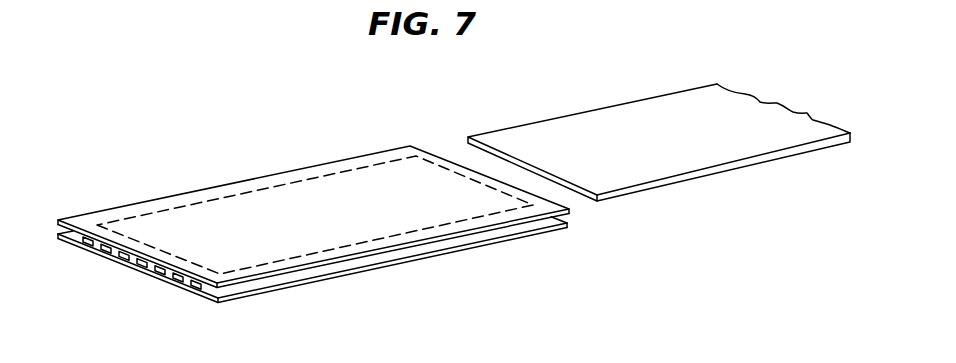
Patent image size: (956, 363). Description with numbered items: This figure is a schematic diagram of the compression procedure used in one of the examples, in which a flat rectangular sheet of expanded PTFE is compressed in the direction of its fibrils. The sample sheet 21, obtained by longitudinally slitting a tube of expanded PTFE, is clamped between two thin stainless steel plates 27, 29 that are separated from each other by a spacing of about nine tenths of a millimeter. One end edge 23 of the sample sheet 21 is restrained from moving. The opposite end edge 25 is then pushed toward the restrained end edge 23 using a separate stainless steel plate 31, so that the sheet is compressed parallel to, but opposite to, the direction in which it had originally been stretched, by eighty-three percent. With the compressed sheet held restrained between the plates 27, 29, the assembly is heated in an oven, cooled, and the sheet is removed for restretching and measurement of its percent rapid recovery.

The sample sheet 21 is at (117, 259).
The end edge 23 is at (188, 280).
The opposite end edge 25 is at (423, 167).
The stainless steel plate 27 is at (373, 152).
The stainless steel plate 29 is at (397, 264).
The stainless steel plate 31 is at (712, 148).